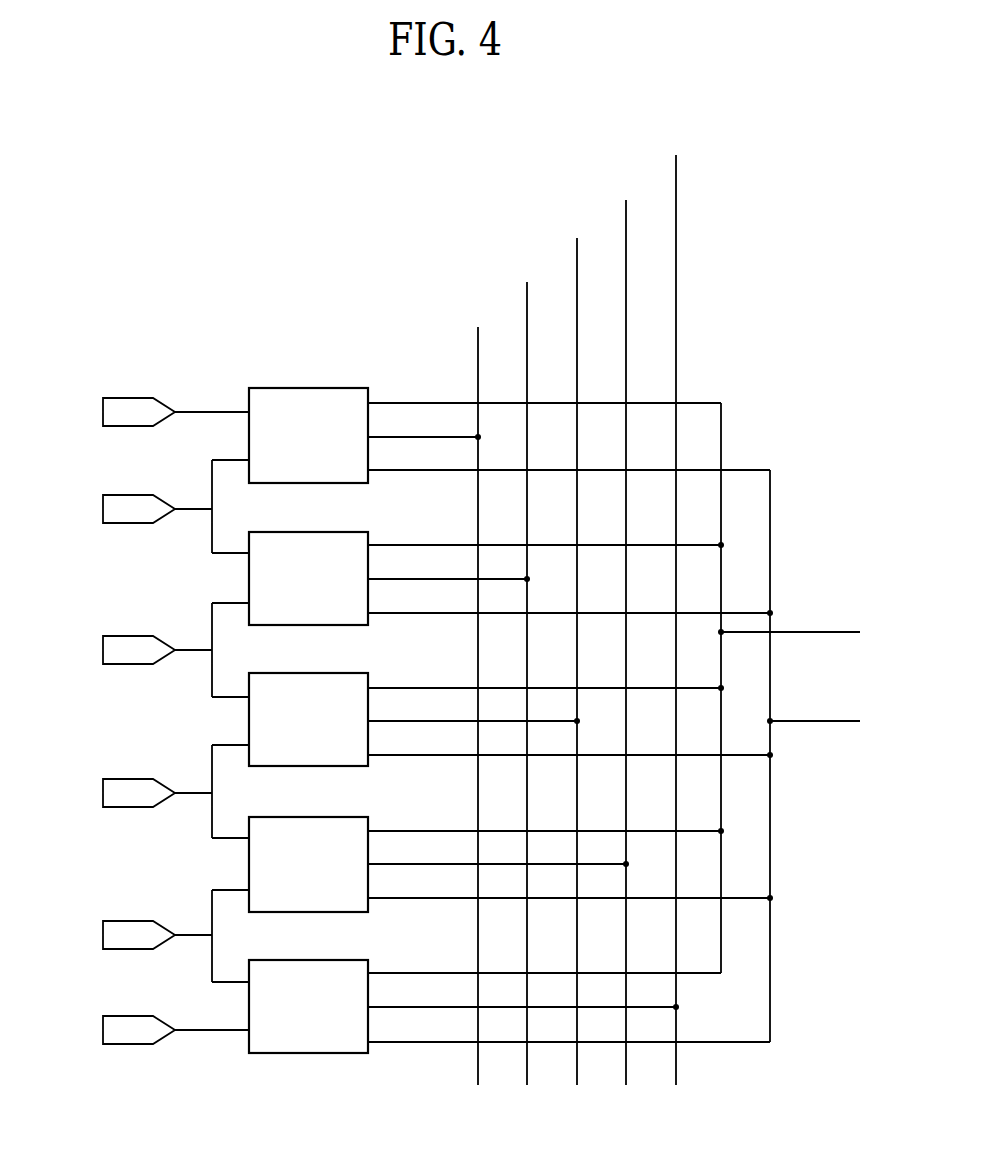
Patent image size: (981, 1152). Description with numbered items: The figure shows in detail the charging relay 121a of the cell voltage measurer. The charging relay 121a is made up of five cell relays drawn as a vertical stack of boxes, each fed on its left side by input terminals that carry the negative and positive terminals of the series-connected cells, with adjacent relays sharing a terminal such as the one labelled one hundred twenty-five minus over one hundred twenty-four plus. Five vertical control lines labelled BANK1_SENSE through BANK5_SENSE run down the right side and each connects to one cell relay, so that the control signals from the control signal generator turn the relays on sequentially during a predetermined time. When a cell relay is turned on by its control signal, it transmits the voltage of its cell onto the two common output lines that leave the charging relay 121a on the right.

The charging relay 121a is at (747, 183).